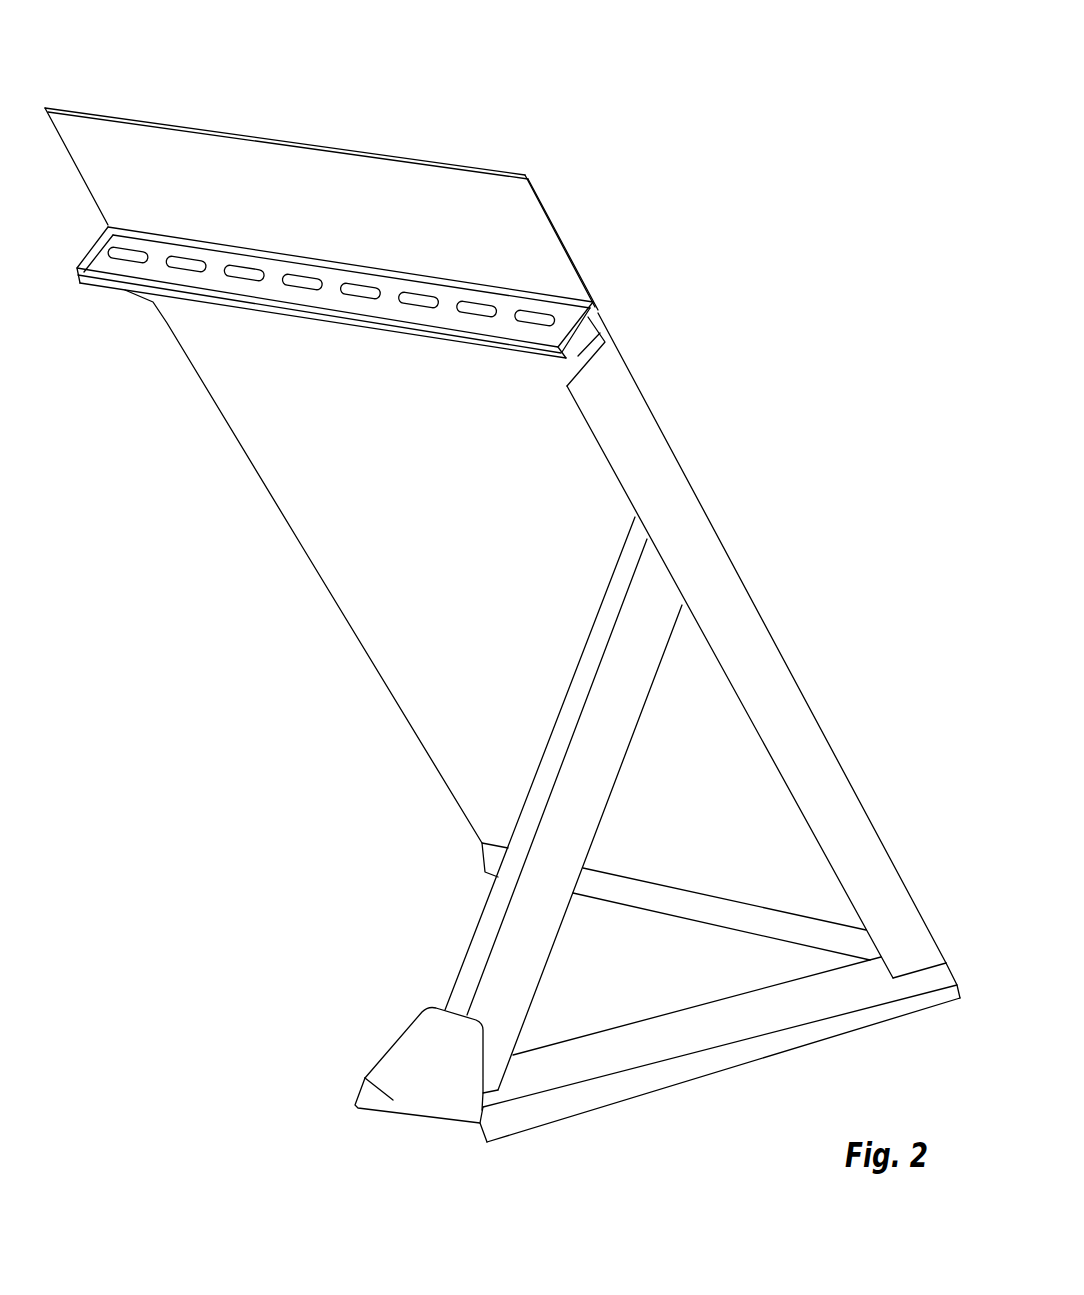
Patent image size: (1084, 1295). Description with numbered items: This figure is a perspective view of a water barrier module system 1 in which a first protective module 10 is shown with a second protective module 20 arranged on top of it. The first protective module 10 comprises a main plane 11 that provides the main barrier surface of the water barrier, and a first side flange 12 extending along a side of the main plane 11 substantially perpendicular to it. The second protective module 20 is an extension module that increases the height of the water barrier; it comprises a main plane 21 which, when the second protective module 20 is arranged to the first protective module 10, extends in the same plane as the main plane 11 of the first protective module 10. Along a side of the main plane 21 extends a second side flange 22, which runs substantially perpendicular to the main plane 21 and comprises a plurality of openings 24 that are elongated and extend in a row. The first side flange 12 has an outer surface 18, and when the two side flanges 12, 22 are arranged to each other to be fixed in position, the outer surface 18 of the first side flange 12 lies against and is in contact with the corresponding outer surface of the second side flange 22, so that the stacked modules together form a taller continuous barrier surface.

The water barrier module system 1 is at (331, 116).
The first protective module 10 is at (252, 464).
The main plane 11 is at (318, 528).
The first side flange 12 is at (593, 350).
The outer surface 18 is at (585, 325).
The second protective module 20 is at (543, 210).
The main plane 21 is at (483, 190).
The second side flange 22 is at (593, 307).
The openings 24 is at (225, 270).